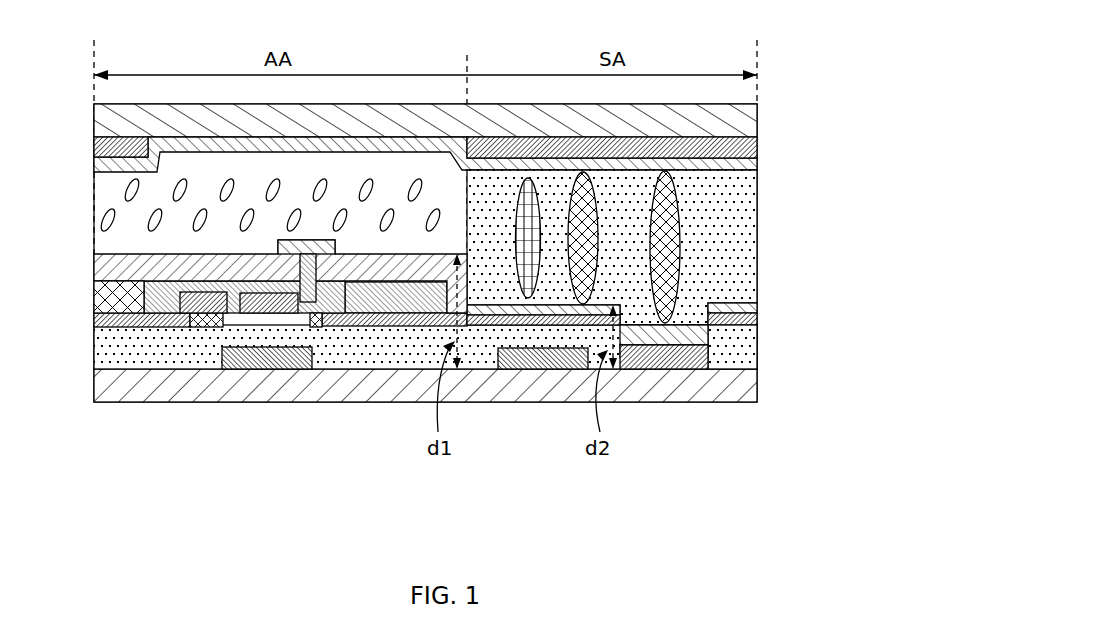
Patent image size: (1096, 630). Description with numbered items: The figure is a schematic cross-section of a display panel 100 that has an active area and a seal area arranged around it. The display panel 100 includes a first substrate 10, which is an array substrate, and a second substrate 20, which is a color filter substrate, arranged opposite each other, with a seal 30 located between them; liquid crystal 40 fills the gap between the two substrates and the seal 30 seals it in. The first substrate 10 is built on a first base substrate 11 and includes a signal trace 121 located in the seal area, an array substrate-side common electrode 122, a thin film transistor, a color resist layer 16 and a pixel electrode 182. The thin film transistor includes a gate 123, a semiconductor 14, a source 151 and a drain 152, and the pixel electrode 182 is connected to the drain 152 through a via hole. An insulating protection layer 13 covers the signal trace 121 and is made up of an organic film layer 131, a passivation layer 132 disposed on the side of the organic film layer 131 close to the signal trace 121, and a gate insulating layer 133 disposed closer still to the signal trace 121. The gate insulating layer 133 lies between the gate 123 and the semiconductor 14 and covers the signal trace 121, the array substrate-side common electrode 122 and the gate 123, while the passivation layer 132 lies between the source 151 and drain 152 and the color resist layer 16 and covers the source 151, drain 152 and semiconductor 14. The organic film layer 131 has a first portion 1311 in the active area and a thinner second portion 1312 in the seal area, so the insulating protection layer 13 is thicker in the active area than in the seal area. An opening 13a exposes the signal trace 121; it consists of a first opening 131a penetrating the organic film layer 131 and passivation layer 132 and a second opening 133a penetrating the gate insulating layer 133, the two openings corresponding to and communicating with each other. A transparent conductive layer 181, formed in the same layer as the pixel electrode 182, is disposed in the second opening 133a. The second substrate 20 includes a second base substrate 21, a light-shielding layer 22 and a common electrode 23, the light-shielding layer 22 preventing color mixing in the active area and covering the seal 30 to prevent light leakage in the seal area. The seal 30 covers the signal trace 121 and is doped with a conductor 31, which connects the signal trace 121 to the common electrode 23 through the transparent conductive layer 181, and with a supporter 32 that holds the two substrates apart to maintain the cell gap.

The display panel 100 is at (99, 46).
The first substrate 10 is at (509, 362).
The first base substrate 11 is at (757, 398).
The signal trace 121 is at (757, 369).
The array substrate-side common electrode 122 is at (545, 369).
The gate 123 is at (267, 370).
The insulating protection layer 13 is at (489, 362).
The organic film layer 131 is at (468, 362).
The first portion 1311 is at (390, 265).
The second portion 1312 is at (490, 305).
The passivation layer 132 is at (757, 320).
The gate insulating layer 133 is at (757, 345).
The opening 13a is at (765, 301).
The first opening 131a is at (688, 308).
The second opening 133a is at (704, 333).
The semiconductor 14 is at (228, 323).
The source 151 is at (197, 320).
The drain 152 is at (313, 320).
The color resist layer 16 is at (94, 297).
The transparent conductive layer 181 is at (655, 370).
The pixel electrode 182 is at (278, 249).
The second substrate 20 is at (483, 133).
The second base substrate 21 is at (757, 112).
The light-shielding layer 22 is at (757, 148).
The common electrode 23 is at (757, 165).
The seal 30 is at (757, 178).
The conductor 31 is at (680, 202).
The supporter 32 is at (528, 238).
The liquid crystal 40 is at (128, 191).